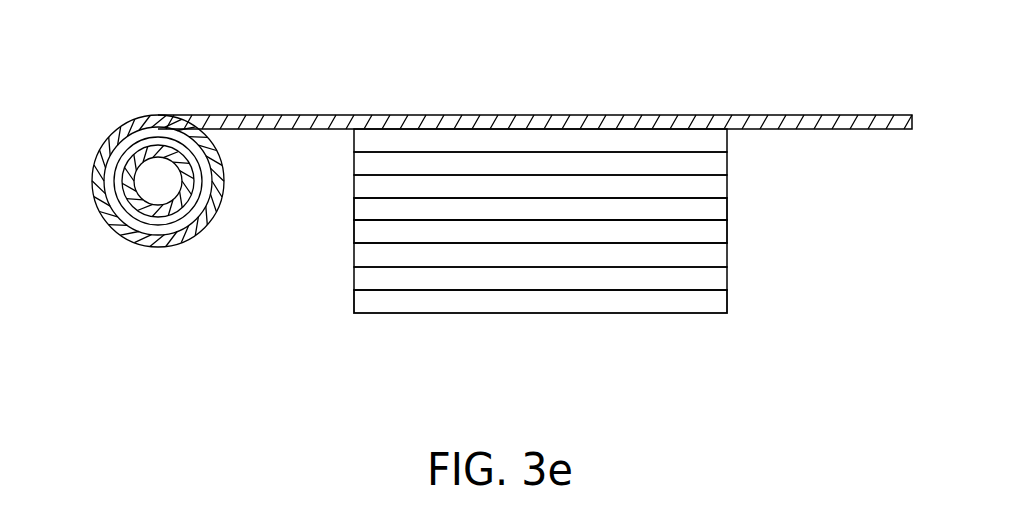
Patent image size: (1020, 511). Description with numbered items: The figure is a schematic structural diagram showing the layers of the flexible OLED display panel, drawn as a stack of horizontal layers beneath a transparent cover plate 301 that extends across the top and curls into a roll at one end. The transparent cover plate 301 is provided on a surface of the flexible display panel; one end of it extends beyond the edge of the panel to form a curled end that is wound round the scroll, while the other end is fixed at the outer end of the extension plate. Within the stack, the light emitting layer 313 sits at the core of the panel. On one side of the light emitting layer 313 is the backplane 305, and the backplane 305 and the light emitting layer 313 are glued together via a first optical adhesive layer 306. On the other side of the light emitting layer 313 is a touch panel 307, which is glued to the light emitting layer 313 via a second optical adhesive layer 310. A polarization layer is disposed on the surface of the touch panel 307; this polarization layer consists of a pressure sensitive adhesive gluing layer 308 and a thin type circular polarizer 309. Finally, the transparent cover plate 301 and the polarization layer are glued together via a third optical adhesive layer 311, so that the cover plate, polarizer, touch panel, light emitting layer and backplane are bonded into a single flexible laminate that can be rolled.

The transparent cover plate 301 is at (540, 115).
The backplane 305 is at (354, 303).
The first optical adhesive layer 306 is at (727, 282).
The touch panel 307 is at (354, 208).
The pressure sensitive adhesive gluing layer 308 is at (727, 188).
The thin type circular polarizer 309 is at (354, 160).
The second optical adhesive layer 310 is at (727, 235).
The third optical adhesive layer 311 is at (727, 140).
The light emitting layer 313 is at (354, 255).